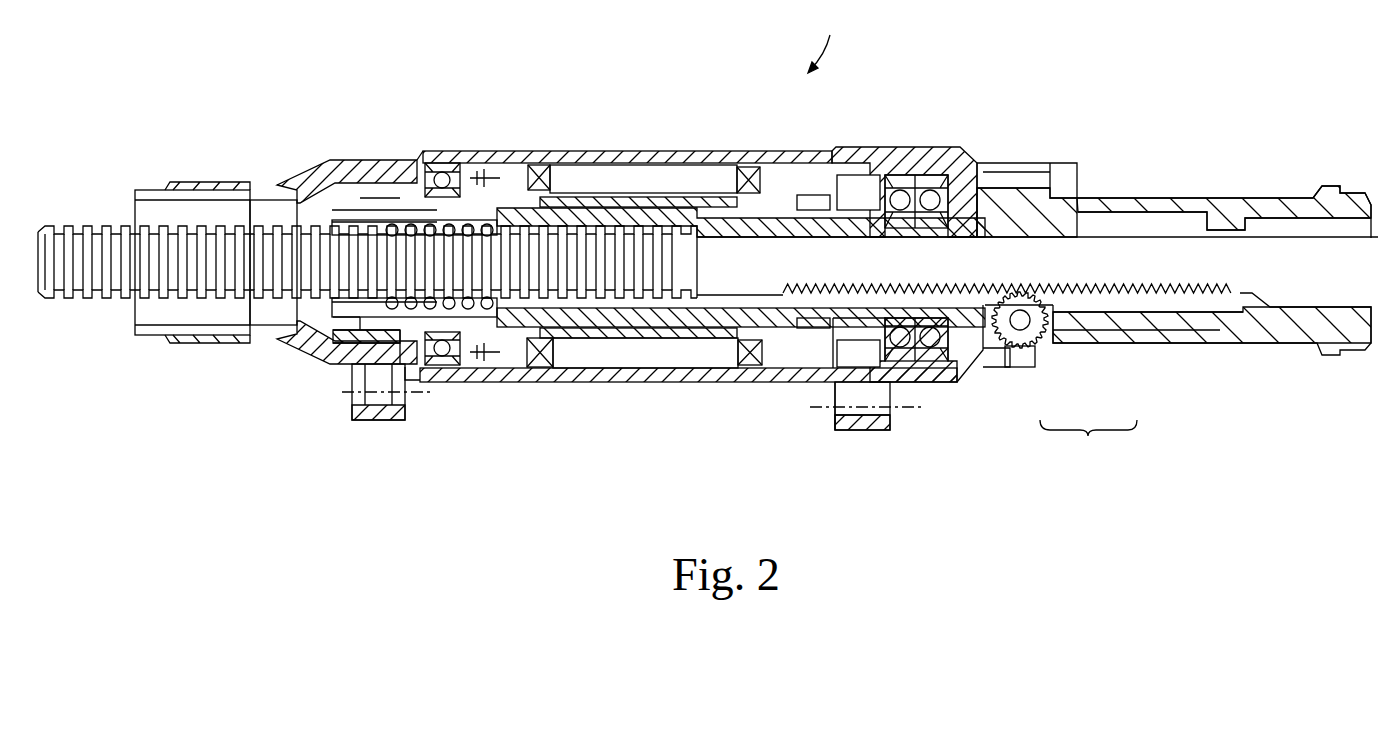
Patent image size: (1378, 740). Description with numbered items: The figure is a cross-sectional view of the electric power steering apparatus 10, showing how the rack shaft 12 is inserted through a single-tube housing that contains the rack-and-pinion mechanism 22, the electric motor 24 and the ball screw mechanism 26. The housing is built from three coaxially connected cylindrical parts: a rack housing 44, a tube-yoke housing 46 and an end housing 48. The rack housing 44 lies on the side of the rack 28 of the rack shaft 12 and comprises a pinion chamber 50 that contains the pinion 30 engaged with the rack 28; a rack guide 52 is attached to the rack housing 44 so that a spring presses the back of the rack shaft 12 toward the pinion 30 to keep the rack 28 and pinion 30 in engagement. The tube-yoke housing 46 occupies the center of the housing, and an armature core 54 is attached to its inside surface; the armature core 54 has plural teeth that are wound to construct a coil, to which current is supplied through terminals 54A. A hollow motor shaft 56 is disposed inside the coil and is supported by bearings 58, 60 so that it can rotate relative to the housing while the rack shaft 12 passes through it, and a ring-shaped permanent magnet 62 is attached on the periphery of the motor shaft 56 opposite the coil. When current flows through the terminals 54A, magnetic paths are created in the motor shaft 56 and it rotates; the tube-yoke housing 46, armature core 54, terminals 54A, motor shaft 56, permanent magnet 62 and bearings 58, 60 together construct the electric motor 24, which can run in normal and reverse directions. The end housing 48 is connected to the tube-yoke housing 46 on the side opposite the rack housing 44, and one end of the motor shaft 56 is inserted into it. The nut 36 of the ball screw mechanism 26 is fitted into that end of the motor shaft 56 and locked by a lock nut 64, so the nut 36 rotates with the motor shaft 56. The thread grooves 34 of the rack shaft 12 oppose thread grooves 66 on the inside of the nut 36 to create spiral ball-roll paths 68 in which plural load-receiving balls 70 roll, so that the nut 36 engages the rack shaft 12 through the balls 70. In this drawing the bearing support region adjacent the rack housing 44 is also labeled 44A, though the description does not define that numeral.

The electric power steering apparatus 10 is at (827, 36).
The rack shaft 12 is at (767, 225).
The rack-and-pinion mechanism 22 is at (1088, 446).
The electric motor 24 is at (772, 362).
The ball screw mechanism 26 is at (415, 367).
The rack 28 is at (1097, 347).
The pinion 30 is at (1050, 347).
The thread grooves 34 is at (587, 327).
The nut 36 is at (533, 383).
The rack housing 44 is at (1177, 343).
The bearing holder 44A is at (962, 158).
The tube-yoke housing 46 is at (717, 160).
The end housing 48 is at (343, 160).
The pinion chamber 50 is at (982, 382).
The rack guide 52 is at (1062, 183).
The armature core 54 is at (647, 167).
The terminals 54A is at (472, 160).
The motor shaft 56 is at (640, 328).
The bearing 58 is at (935, 175).
The bearing 60 is at (445, 160).
The ring-shaped permanent magnet 62 is at (690, 342).
The lock nut 64 is at (340, 368).
The thread grooves 66 is at (553, 170).
The ball-roll paths 68 is at (475, 383).
The balls 70 is at (438, 406).